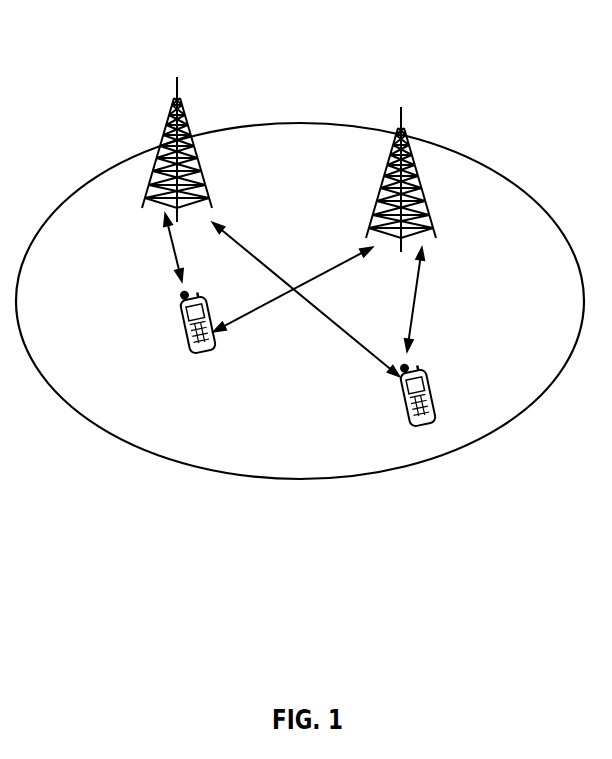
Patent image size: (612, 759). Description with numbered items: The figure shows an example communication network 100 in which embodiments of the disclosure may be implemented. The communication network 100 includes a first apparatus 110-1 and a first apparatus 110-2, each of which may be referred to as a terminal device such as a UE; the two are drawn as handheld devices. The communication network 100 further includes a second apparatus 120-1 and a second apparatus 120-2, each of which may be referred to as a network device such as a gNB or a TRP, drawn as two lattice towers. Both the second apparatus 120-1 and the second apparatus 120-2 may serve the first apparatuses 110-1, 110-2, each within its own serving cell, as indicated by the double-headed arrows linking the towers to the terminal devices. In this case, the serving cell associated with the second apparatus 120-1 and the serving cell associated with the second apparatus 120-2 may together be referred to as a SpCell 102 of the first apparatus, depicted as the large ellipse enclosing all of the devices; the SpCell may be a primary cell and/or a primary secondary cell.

The communication network 100 is at (339, 55).
The SpCell 102 is at (505, 178).
The second apparatus 120-1 is at (190, 121).
The second apparatus 120-2 is at (413, 151).
The first apparatus 110-1 is at (190, 356).
The first apparatus 110-2 is at (425, 428).